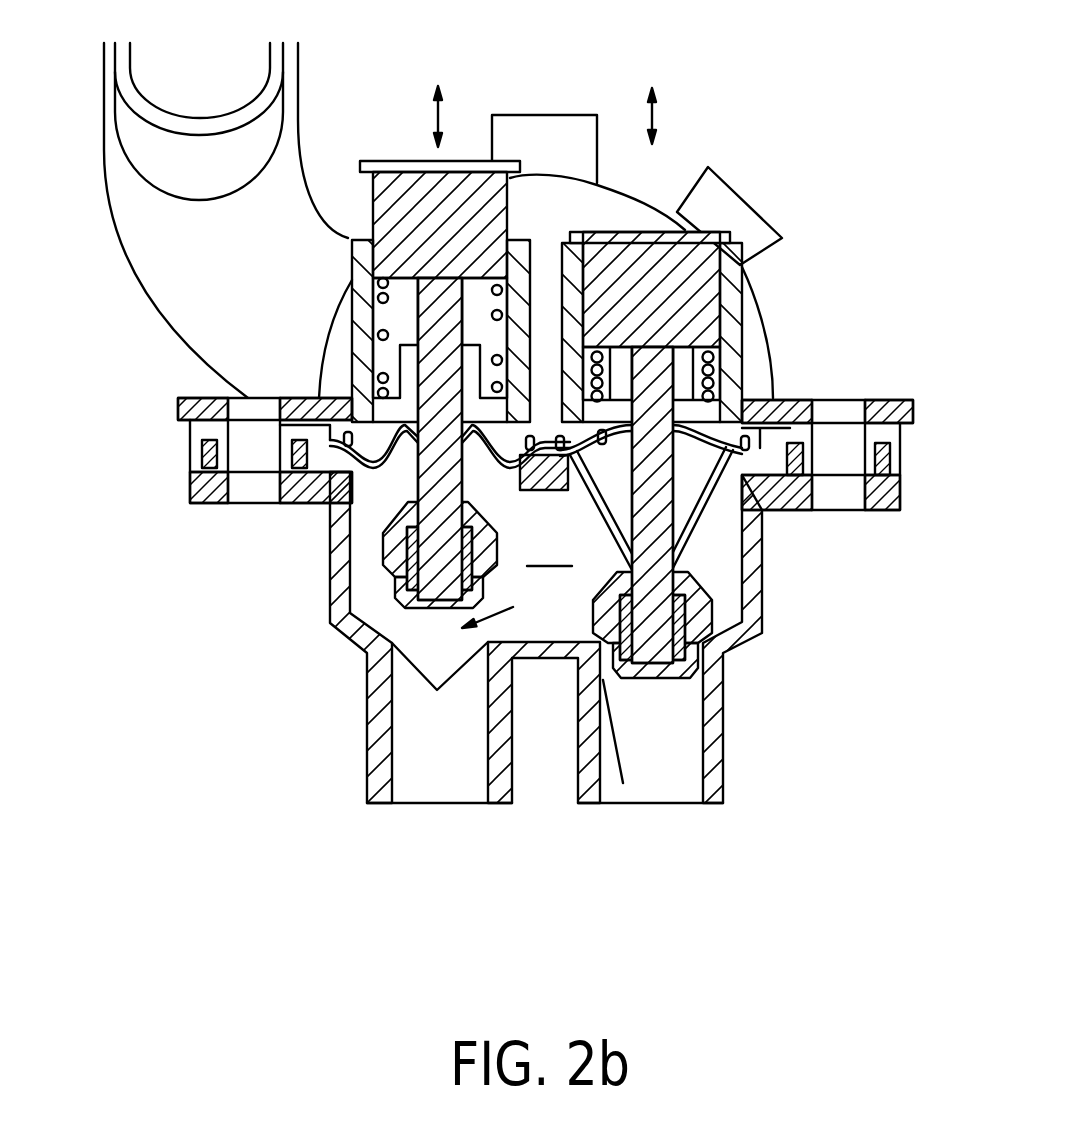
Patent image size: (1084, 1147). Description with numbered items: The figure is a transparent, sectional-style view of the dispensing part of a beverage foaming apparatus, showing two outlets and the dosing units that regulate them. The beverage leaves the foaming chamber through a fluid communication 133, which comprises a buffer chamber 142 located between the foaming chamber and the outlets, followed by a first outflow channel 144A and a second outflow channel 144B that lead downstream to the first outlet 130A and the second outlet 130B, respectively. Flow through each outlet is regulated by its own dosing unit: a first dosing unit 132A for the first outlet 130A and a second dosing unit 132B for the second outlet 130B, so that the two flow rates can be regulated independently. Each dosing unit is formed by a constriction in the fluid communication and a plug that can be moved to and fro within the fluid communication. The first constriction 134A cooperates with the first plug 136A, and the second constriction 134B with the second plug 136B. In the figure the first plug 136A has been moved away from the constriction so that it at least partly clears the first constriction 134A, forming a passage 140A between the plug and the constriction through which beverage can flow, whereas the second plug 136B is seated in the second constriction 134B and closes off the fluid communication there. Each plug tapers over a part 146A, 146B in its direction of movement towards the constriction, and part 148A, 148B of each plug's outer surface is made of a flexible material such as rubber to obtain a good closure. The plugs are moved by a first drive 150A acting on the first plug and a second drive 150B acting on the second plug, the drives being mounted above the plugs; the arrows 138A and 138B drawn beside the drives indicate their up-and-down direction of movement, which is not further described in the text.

The first outlet 130A is at (413, 755).
The second outlet 130B is at (668, 762).
The first dosing unit 132A is at (395, 620).
The second dosing unit 132B is at (724, 652).
The fluid communication 133 is at (655, 703).
The first constriction 134A is at (437, 690).
The second constriction 134B is at (720, 647).
The first plug 136A is at (271, 464).
The second plug 136B is at (773, 533).
The first actuation direction 138A is at (435, 112).
The second actuation direction 138B is at (663, 113).
The passage 140A is at (523, 608).
The buffer chamber 142 is at (549, 549).
The first outflow channel 144A is at (455, 695).
The second outflow channel 144B is at (642, 722).
The tapering part of first plug 146A is at (385, 570).
The tapering part of second plug 146B is at (700, 640).
The flexible outer surface part of first plug 148A is at (392, 580).
The flexible outer surface part of second plug 148B is at (705, 645).
The first drive 150A is at (467, 243).
The second drive 150B is at (690, 257).